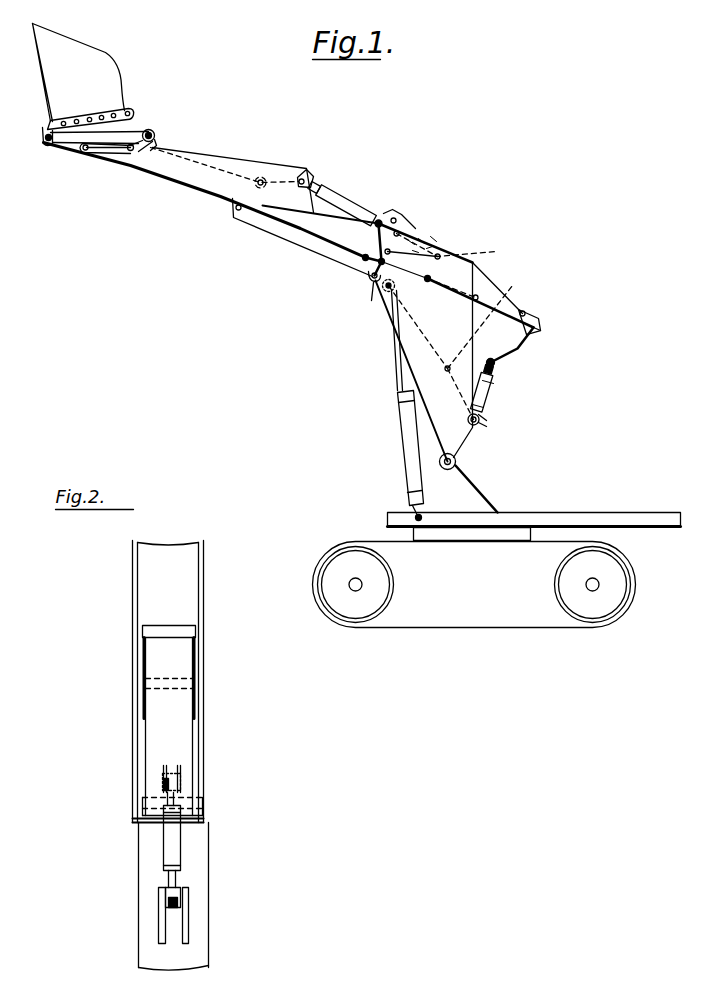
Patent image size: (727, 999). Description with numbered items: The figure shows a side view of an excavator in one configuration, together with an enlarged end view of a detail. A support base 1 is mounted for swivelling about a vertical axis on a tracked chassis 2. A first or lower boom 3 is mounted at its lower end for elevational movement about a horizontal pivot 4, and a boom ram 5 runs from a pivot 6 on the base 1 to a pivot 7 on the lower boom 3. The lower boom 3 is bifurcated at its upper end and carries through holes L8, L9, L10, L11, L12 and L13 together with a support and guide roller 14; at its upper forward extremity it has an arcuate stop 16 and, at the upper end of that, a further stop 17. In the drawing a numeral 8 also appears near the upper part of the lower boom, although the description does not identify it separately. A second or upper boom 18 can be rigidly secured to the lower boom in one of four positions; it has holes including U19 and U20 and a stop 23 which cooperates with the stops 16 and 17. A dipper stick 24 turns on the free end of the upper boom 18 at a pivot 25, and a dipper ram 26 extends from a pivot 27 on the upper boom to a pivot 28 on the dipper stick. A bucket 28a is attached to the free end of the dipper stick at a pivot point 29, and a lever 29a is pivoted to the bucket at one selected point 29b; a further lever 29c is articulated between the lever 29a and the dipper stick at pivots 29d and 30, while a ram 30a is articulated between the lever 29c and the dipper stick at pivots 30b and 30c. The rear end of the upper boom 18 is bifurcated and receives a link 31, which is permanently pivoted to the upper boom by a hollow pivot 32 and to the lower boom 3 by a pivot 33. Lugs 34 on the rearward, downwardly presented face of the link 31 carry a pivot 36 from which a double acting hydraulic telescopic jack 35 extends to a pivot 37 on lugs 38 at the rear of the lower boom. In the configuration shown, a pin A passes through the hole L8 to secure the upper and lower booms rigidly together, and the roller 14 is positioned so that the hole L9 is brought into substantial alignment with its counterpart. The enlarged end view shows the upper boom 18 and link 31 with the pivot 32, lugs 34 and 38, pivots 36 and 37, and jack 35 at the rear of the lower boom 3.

In FIG. 1, the support base 1 is at (490, 501).
In FIG. 1, the chassis 2 is at (347, 565).
In FIG. 1, the lower boom 3 is at (413, 367).
In FIG. 2, the lower boom 3 is at (207, 883).
In FIG. 1, the horizontal pivot 4 is at (456, 462).
In FIG. 1, the boom ram 5 is at (402, 445).
In FIG. 1, the pivot 6 is at (412, 515).
In FIG. 1, the pivot 7 is at (392, 287).
In FIG. 1, the link 8 is at (364, 260).
In FIG. 1, the support and guide roller 14 is at (372, 300).
In FIG. 1, the arcuate stop 16 is at (360, 221).
In FIG. 1, the further stop 17 is at (383, 213).
In FIG. 1, the upper boom 18 is at (288, 228).
In FIG. 2, the upper boom 18 is at (187, 570).
In FIG. 1, the stop 23 is at (372, 277).
In FIG. 1, the dipper stick 24 is at (200, 193).
In FIG. 1, the pivot 25 is at (248, 218).
In FIG. 1, the dipper ram 26 is at (381, 222).
In FIG. 1, the pivot 27 is at (461, 251).
In FIG. 1, the pivot 28 is at (328, 190).
In FIG. 1, the bucket 28a is at (67, 70).
In FIG. 1, the pivot point 29 is at (49, 140).
In FIG. 1, the lever 29a is at (132, 128).
In FIG. 1, the selected point 29b is at (88, 118).
In FIG. 1, the further lever 29c is at (107, 149).
In FIG. 1, the pivot 29d is at (154, 135).
In FIG. 1, the pivot 30 is at (85, 152).
In FIG. 1, the ram 30a is at (212, 164).
In FIG. 1, the pivot 30b is at (132, 150).
In FIG. 1, the pivot 30c is at (303, 179).
In FIG. 1, the link 31 is at (520, 348).
In FIG. 2, the link 31 is at (182, 743).
In FIG. 1, the pivot 32 is at (538, 331).
In FIG. 2, the pivot 32 is at (193, 682).
In FIG. 1, the pivot 33 is at (447, 365).
In FIG. 1, the lugs 34 is at (497, 366).
In FIG. 2, the lugs 34 is at (165, 782).
In FIG. 1, the hydraulic telescopic jack 35 is at (485, 395).
In FIG. 2, the hydraulic telescopic jack 35 is at (172, 847).
In FIG. 1, the pivot 36 is at (492, 359).
In FIG. 2, the pivot 36 is at (162, 785).
In FIG. 1, the pivot 37 is at (470, 418).
In FIG. 2, the pivot 37 is at (167, 903).
In FIG. 1, the lugs 38 is at (482, 422).
In FIG. 2, the lugs 38 is at (157, 933).
In FIG. 1, the pin A is at (442, 278).
In FIG. 1, the through hole L8 is at (429, 281).
In FIG. 1, the through hole L9 is at (364, 257).
In FIG. 1, the through hole L10 is at (410, 254).
In FIG. 1, the through hole L11 is at (399, 233).
In FIG. 1, the through hole L12 is at (396, 220).
In FIG. 1, the through hole L13 is at (476, 263).
In FIG. 1, the hole U19 is at (525, 316).
In FIG. 1, the hole U20 is at (478, 297).